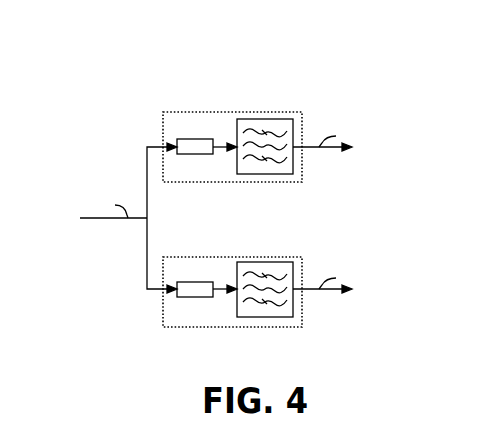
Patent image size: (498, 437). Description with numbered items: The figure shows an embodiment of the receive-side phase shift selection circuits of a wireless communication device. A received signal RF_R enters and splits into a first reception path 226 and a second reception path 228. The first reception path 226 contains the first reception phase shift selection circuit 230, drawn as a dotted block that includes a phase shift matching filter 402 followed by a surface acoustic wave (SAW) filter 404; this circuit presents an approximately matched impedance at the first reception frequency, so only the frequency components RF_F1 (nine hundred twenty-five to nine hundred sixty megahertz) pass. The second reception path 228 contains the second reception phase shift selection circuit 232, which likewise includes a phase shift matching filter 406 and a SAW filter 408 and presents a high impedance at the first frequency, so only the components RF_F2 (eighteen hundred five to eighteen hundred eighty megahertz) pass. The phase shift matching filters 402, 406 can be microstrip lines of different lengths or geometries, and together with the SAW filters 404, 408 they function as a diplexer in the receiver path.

The first reception path 226 is at (337, 63).
The second reception path 228 is at (233, 199).
The first reception phase shift selection circuit 230 is at (231, 253).
The second reception phase shift selection circuit 232 is at (231, 110).
The phase shift matching filter 402 is at (193, 290).
The surface acoustic wave (SAW) filter 404 is at (268, 262).
The phase shift matching filter 406 is at (183, 143).
The surface acoustic wave (SAW) filter 408 is at (268, 119).